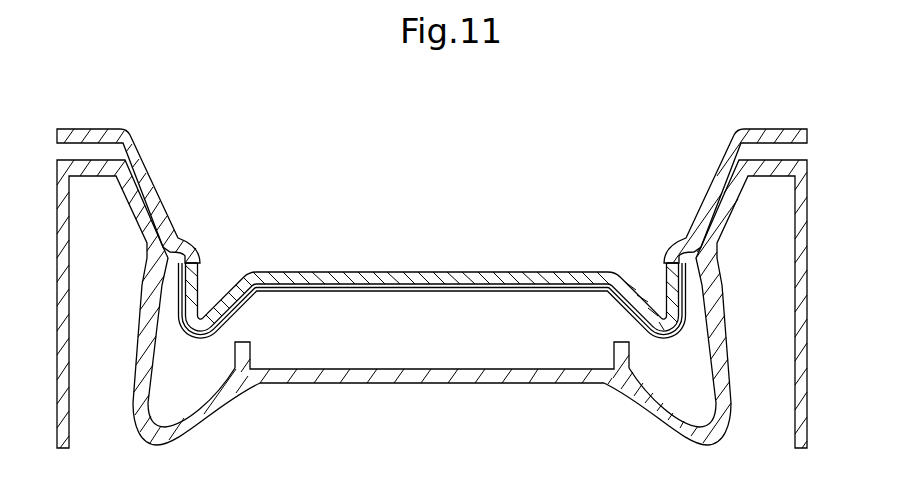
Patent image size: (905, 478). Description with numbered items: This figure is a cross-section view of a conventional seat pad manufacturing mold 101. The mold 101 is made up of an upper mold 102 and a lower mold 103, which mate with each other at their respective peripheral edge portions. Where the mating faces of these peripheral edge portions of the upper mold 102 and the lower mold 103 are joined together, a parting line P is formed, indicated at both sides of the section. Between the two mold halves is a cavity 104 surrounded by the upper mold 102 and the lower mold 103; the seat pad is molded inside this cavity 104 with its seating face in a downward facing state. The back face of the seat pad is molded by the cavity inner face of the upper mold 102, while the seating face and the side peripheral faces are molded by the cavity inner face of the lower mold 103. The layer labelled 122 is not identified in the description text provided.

The mold 101 is at (316, 247).
The upper mold 102 is at (520, 271).
The lower mold 103 is at (512, 385).
The cavity 104 is at (432, 360).
The insulating sheet 122 is at (396, 295).
The parting line P is at (150, 193).